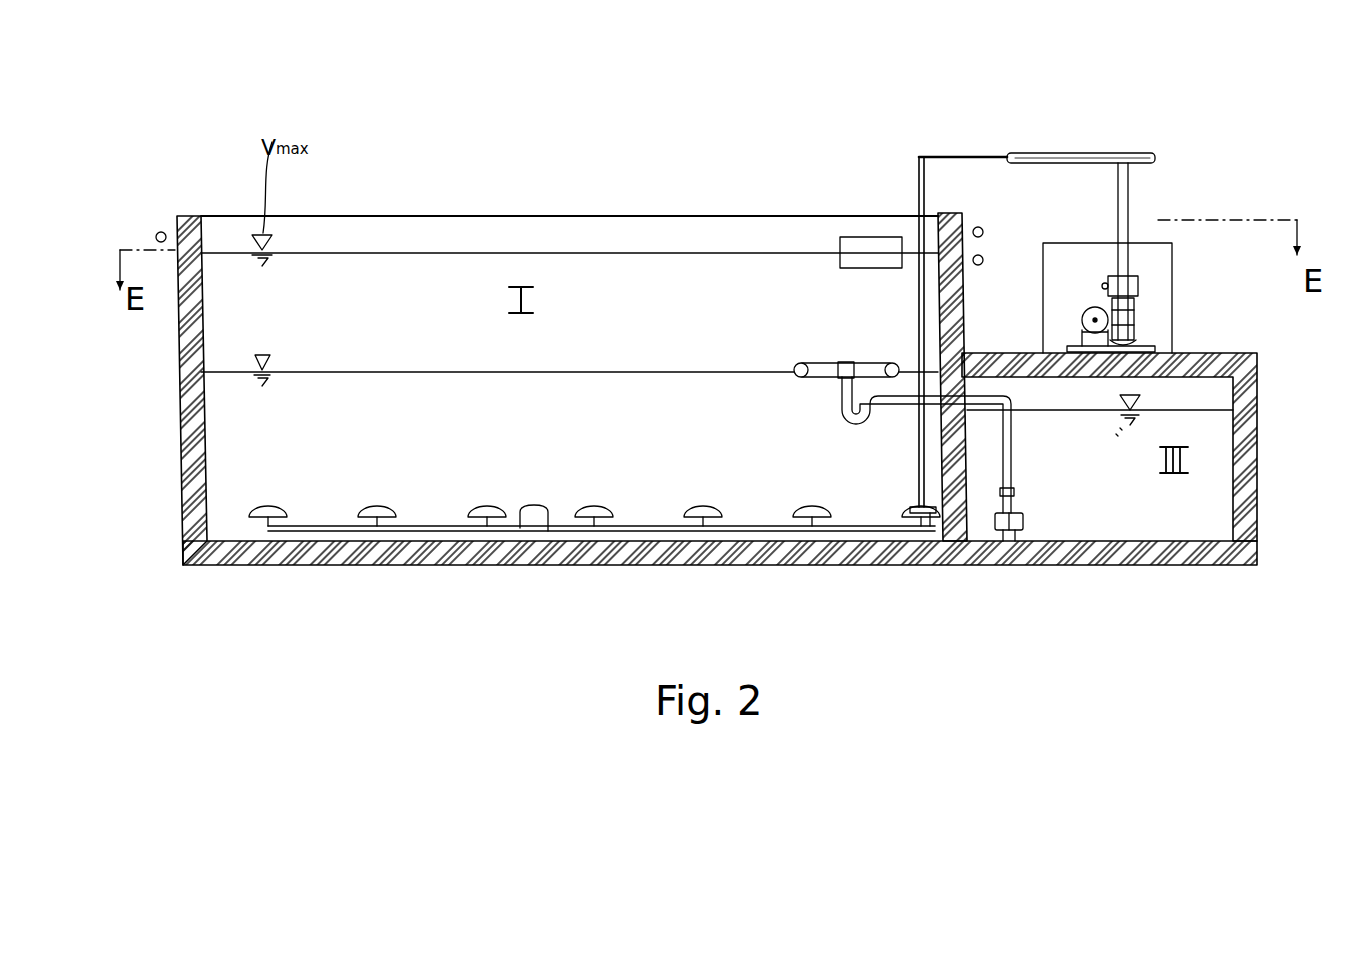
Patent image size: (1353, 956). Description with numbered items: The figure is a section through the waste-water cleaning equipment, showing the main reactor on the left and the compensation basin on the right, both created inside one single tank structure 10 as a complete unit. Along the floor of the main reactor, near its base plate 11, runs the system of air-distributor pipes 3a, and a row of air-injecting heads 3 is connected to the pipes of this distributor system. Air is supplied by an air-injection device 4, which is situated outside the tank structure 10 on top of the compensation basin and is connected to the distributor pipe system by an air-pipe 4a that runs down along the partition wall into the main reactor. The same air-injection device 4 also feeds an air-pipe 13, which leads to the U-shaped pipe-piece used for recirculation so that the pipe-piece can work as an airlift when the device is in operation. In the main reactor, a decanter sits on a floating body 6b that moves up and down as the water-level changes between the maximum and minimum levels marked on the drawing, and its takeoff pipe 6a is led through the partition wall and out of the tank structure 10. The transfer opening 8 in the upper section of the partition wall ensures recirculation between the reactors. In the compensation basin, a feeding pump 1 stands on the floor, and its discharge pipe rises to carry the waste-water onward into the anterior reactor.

The feeding pump 1 is at (1023, 520).
The air-injecting heads 3 is at (720, 520).
The air-distributor pipes 3a is at (526, 522).
The air-injection device 4 is at (1160, 221).
The air-pipe 4a is at (968, 156).
The takeoff pipe 6a is at (823, 358).
The floating body 6b is at (803, 362).
The transfer opening 8 is at (870, 237).
The tank structure 10 is at (175, 392).
The base plate 11 is at (594, 545).
The air-pipe 13 is at (161, 231).